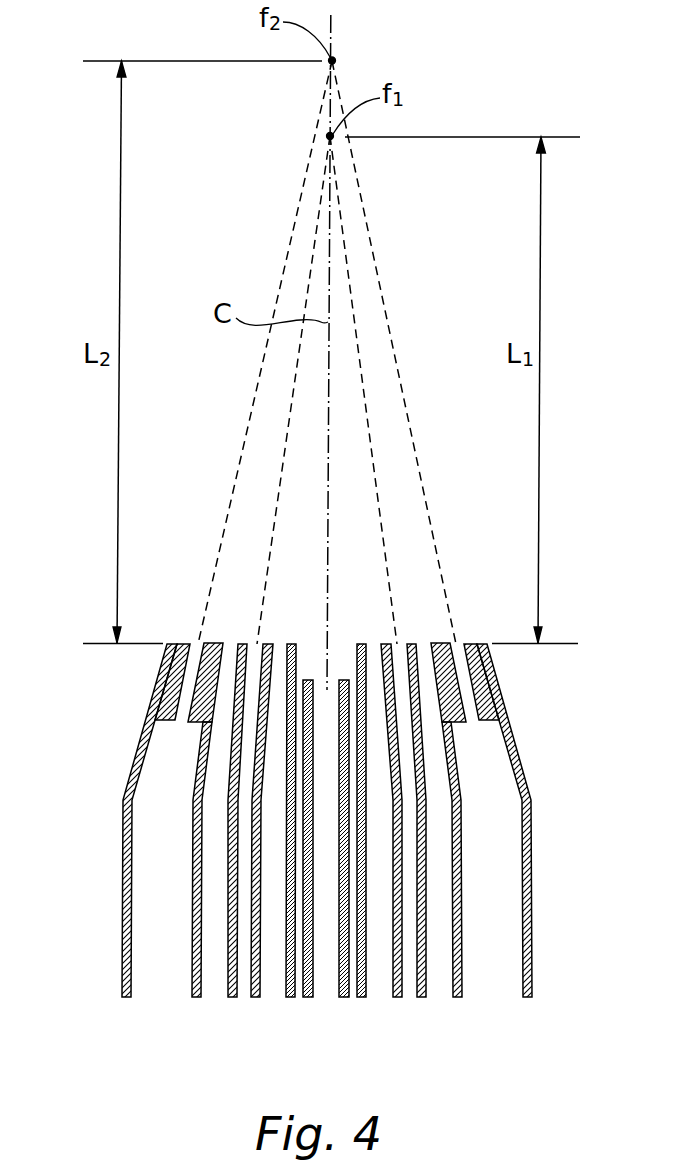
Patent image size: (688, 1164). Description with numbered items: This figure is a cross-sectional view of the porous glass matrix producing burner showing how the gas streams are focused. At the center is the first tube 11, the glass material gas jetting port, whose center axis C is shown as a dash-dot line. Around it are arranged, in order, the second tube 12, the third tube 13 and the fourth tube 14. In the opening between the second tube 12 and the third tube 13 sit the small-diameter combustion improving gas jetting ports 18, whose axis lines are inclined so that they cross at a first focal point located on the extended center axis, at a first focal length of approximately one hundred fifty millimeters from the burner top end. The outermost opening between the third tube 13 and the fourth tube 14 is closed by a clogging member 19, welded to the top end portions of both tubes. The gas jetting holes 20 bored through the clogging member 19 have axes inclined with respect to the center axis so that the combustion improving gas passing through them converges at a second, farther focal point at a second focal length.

The first tube 11 is at (310, 983).
The second tube 12 is at (365, 980).
The third tube 13 is at (192, 970).
The fourth tube 14 is at (122, 915).
The small-diameter combustion improving gas jetting ports 18 is at (229, 987).
The clogging member 19 is at (167, 698).
The gas jetting holes 20 is at (190, 667).